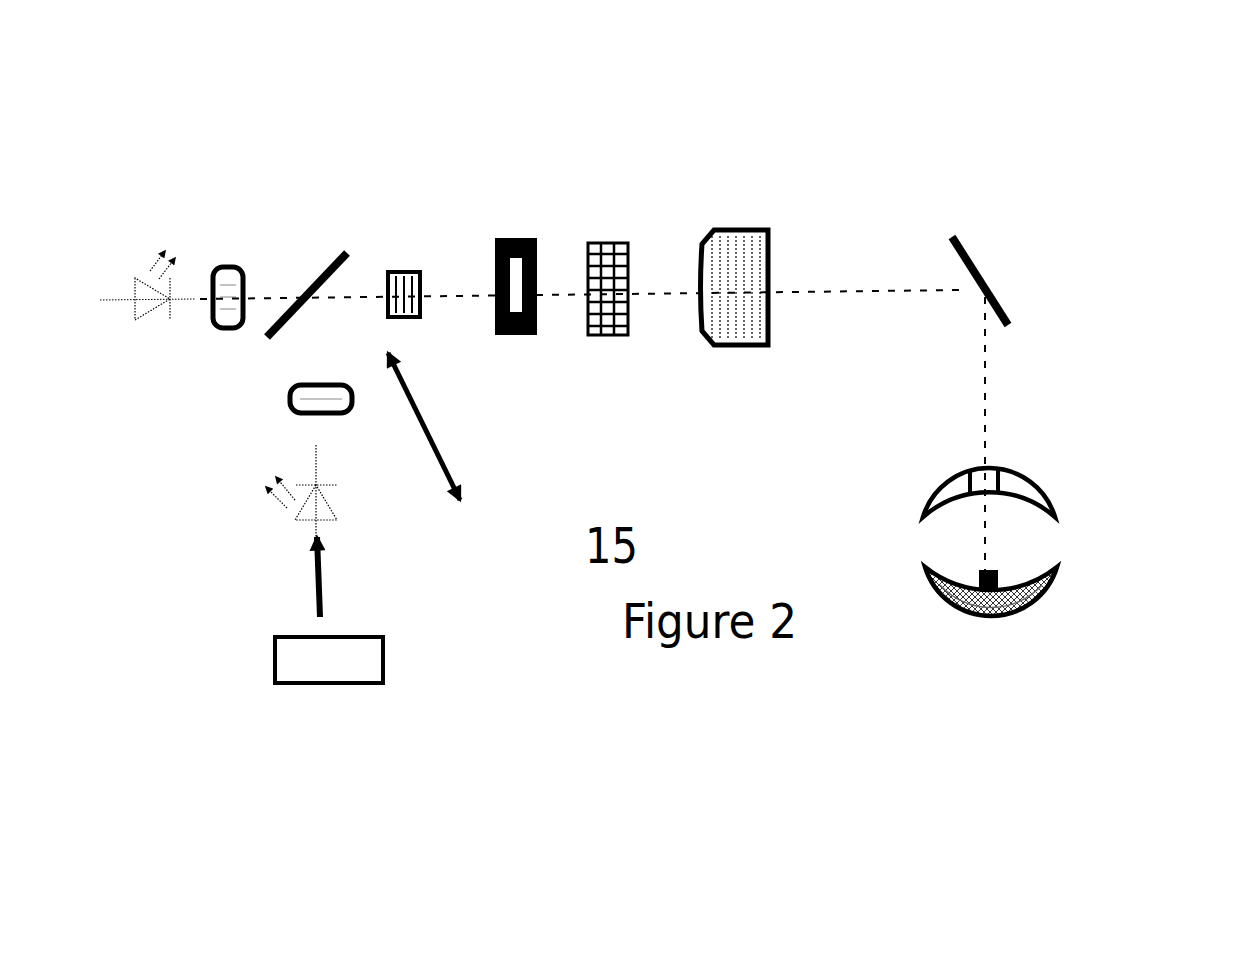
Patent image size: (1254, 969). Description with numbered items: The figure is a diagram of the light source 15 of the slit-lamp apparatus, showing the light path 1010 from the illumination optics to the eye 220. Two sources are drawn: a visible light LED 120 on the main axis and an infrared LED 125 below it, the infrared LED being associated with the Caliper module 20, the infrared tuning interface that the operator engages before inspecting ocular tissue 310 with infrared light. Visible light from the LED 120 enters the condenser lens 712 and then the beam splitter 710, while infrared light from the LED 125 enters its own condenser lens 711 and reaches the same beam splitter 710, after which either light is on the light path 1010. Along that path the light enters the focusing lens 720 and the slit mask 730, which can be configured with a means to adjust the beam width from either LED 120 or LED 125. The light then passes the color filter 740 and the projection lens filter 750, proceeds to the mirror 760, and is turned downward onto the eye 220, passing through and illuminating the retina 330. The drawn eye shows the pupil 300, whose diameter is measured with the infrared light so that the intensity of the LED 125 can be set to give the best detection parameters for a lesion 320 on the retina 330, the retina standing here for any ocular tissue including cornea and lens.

The visible light LED 120 is at (135, 262).
The condenser lens 712 is at (223, 247).
The beam splitter 710 is at (328, 263).
The condenser lens 711 is at (272, 395).
The infrared LED 125 is at (298, 537).
The Caliper module 20 is at (392, 672).
The focusing lens 720 is at (417, 257).
The slit mask 730 is at (513, 225).
The color filter 740 is at (615, 233).
The projection lens filter 750 is at (765, 217).
The light path 1010 is at (895, 265).
The mirror 760 is at (1023, 298).
The light source 15 is at (1022, 497).
The ocular tissue 310 is at (922, 468).
The pupil 300 is at (1002, 467).
The retina 330 is at (937, 562).
The lesion 320 is at (1007, 563).
The eye 220 is at (1040, 608).